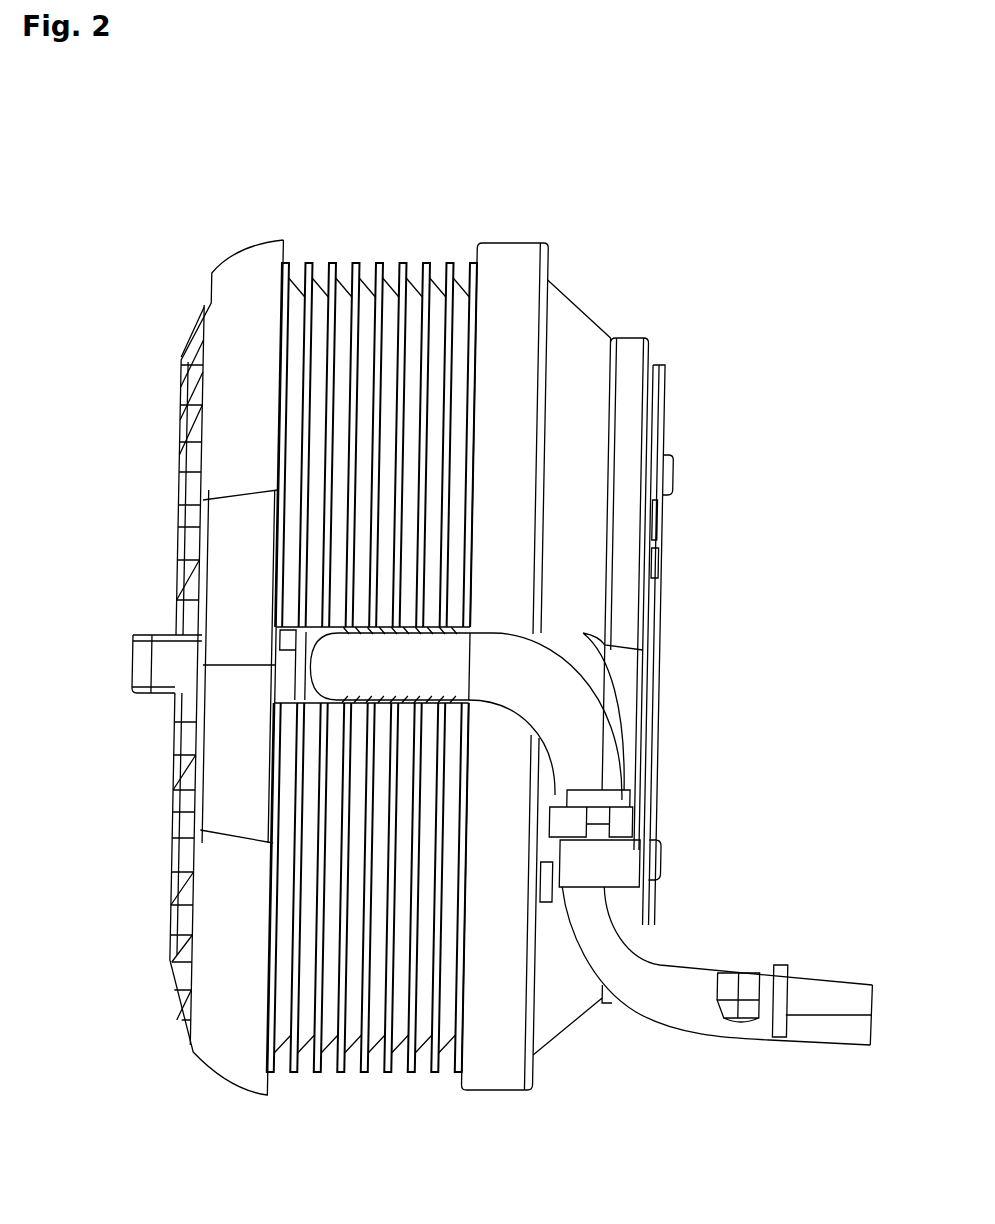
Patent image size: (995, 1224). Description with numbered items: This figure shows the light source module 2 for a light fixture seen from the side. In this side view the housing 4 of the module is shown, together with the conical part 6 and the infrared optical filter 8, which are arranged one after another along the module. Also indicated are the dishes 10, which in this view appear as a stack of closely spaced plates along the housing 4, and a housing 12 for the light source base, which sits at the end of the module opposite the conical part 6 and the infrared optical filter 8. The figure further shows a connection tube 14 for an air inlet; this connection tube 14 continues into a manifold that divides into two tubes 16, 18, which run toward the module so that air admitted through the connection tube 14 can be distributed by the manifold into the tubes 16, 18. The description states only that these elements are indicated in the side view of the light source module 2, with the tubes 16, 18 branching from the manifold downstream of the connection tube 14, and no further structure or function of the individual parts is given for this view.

The light source module 2 is at (571, 147).
The housing 4 is at (538, 243).
The conical part 6 is at (591, 308).
The infrared optical filter 8 is at (673, 515).
The dishes 10 is at (432, 260).
The housing for the light source base 12 is at (240, 1058).
The connection tube 14 is at (837, 1020).
The tube 16 is at (592, 678).
The tube 18 is at (561, 680).